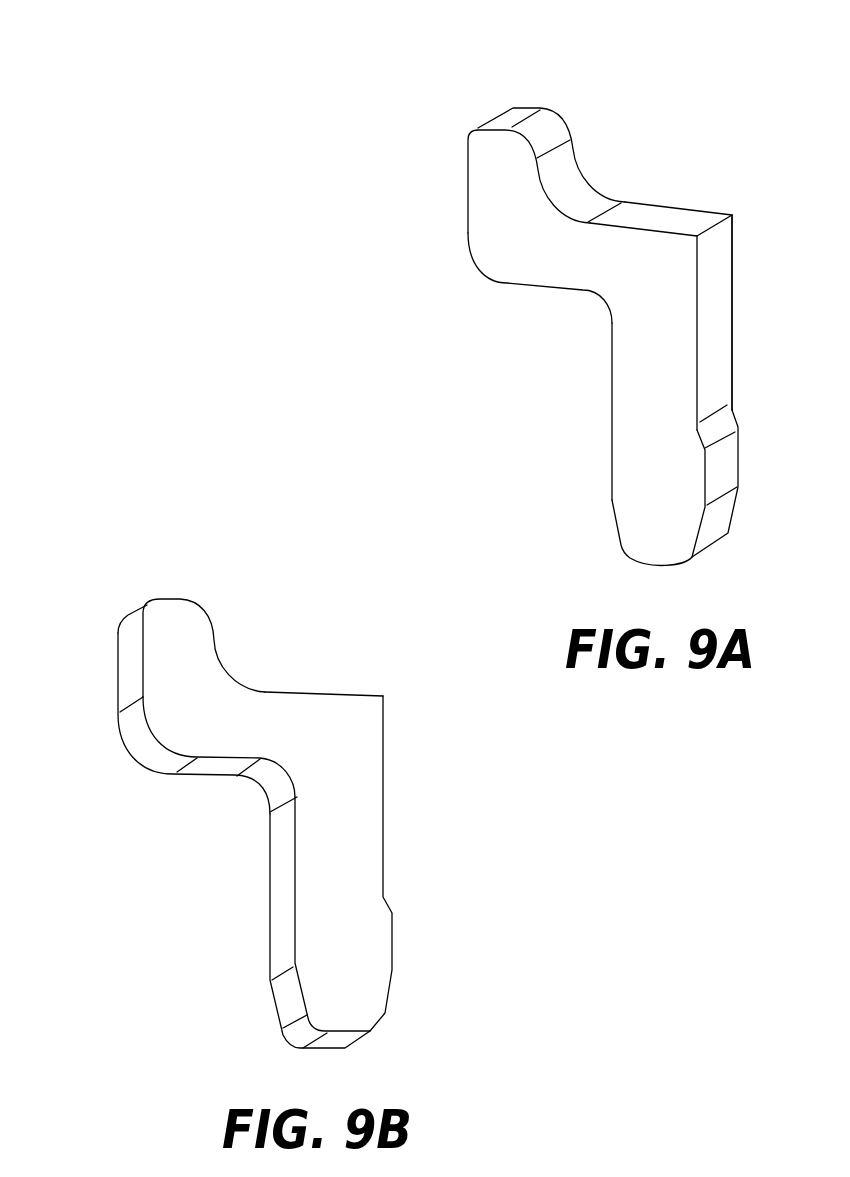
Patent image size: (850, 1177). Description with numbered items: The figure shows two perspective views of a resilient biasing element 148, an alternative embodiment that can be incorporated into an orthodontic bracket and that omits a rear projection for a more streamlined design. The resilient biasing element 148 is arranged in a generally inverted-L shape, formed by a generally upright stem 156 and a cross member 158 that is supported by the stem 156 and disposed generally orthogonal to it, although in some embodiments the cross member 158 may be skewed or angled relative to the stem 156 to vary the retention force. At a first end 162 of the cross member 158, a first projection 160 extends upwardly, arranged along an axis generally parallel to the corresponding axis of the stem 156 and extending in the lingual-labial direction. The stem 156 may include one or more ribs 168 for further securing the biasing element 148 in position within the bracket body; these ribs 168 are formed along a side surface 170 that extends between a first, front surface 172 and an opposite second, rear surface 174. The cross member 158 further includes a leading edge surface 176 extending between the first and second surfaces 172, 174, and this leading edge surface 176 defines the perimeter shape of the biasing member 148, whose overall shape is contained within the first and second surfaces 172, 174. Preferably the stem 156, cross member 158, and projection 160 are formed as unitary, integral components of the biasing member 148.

In FIG. 9A, the resilient biasing element 148 is at (383, 68).
In FIG. 9B, the resilient biasing element 148 is at (175, 887).
In FIG. 9A, the upright stem 156 is at (580, 455).
In FIG. 9B, the upright stem 156 is at (340, 853).
In FIG. 9A, the cross member 158 is at (663, 180).
In FIG. 9B, the cross member 158 is at (205, 697).
In FIG. 9A, the first projection 160 is at (505, 181).
In FIG. 9B, the first projection 160 is at (173, 630).
In FIG. 9A, the first end 162 is at (558, 92).
In FIG. 9A, the ribs 168 is at (720, 467).
In FIG. 9A, the side surface 170 is at (713, 347).
In FIG. 9A, the first surface 172 is at (650, 343).
In FIG. 9A, the second surface 174 is at (733, 288).
In FIG. 9B, the leading edge surface 176 is at (130, 667).